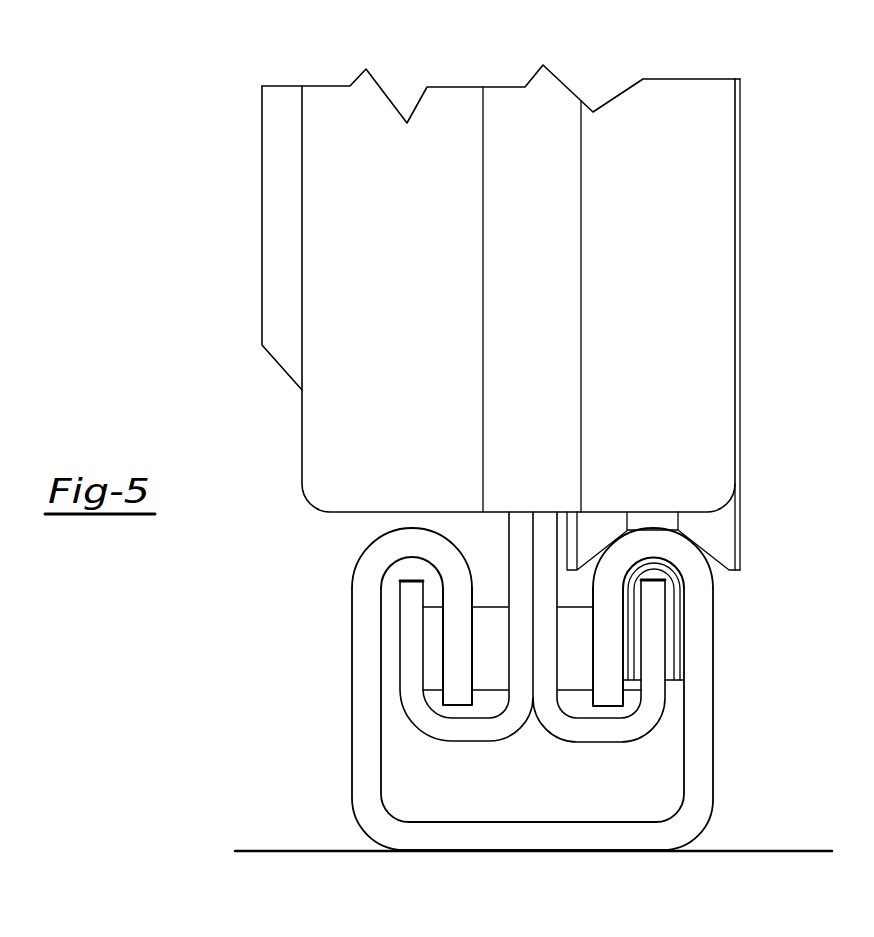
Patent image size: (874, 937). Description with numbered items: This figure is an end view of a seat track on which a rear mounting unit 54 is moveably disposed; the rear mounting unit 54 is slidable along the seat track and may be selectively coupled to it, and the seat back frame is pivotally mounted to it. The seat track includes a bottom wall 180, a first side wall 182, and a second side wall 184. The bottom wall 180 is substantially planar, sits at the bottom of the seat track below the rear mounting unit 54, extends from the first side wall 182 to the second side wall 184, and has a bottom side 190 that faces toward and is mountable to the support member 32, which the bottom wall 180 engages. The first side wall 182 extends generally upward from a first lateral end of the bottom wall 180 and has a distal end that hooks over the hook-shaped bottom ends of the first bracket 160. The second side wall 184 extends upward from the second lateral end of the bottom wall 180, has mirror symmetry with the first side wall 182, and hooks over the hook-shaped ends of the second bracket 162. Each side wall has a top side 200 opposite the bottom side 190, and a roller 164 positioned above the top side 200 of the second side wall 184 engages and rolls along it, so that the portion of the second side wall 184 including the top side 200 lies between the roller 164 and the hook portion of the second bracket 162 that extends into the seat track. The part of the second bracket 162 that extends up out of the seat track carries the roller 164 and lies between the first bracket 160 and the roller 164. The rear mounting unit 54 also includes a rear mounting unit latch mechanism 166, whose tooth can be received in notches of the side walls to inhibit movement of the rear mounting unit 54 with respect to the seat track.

The support member 32 is at (757, 851).
The rear mounting unit 54 is at (740, 283).
The first bracket 160 is at (460, 742).
The second bracket 162 is at (603, 742).
The roller 164 is at (740, 533).
The rear mounting unit latch mechanism 166 is at (493, 690).
The bottom wall 180 is at (510, 837).
The first side wall 182 is at (352, 676).
The second side wall 184 is at (713, 676).
The bottom side 190 is at (557, 852).
The top side 200 is at (412, 528).